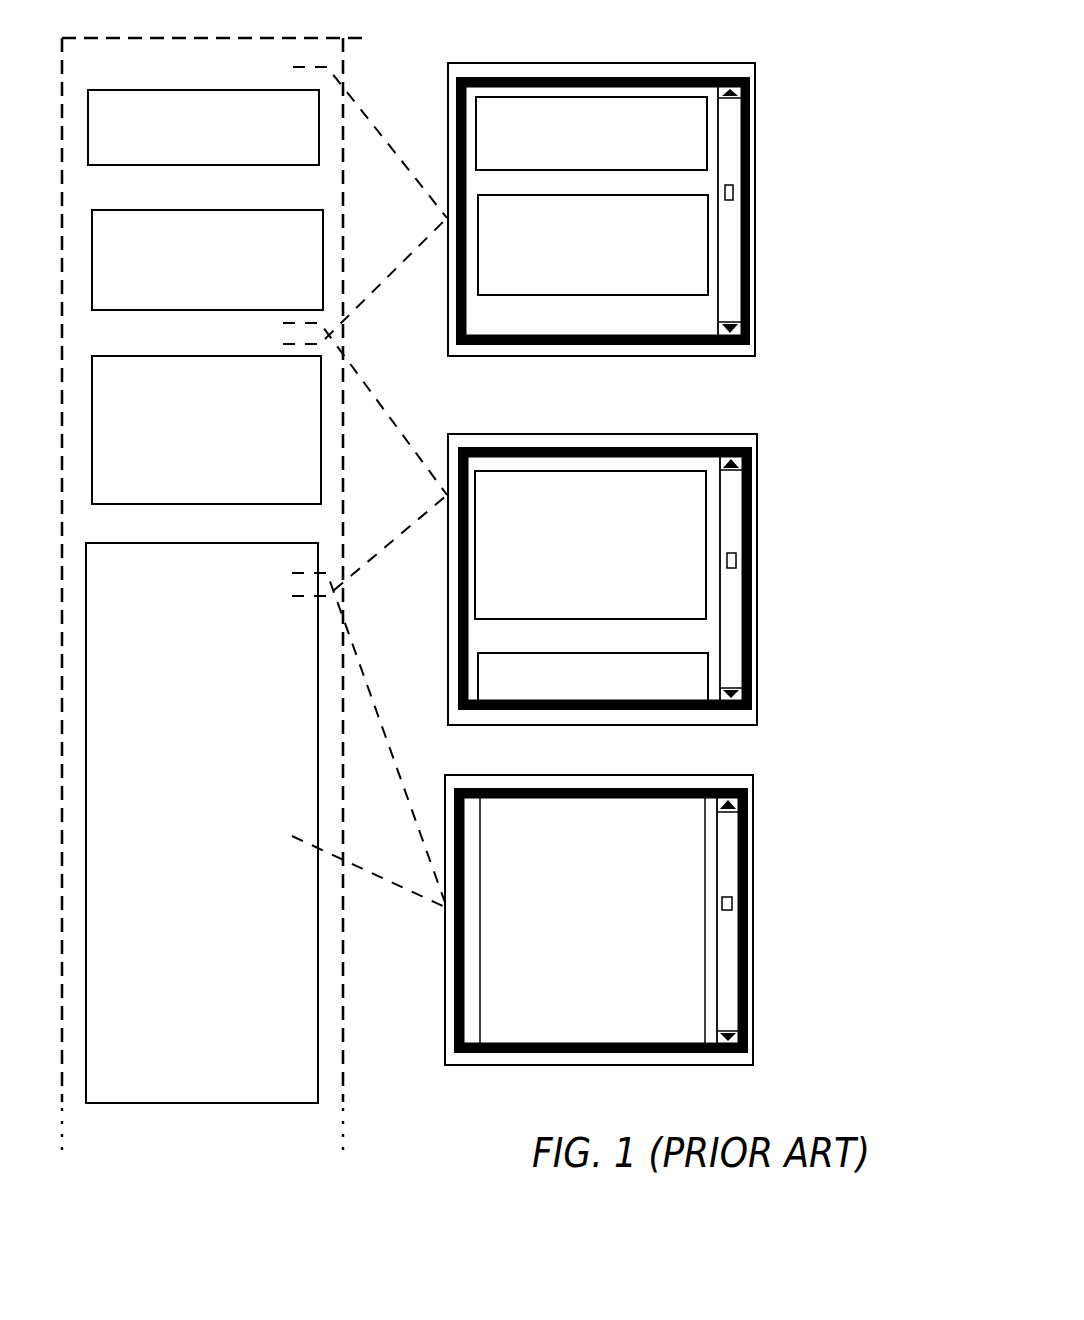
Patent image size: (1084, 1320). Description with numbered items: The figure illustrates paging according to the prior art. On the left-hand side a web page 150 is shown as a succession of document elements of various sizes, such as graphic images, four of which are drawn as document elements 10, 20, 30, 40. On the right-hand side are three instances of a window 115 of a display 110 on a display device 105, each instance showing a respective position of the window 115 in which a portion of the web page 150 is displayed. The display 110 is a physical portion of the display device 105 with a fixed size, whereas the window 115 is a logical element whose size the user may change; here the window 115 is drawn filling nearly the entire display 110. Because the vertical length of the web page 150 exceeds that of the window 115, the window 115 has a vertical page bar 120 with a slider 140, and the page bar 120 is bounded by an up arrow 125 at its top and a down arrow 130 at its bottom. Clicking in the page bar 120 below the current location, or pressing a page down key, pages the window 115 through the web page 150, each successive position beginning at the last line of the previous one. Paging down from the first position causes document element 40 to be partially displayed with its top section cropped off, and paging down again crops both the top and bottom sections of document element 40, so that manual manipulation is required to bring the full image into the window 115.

The document element 10 is at (593, 144).
The document element 20 is at (595, 256).
The document element 30 is at (592, 555).
The document element 40 is at (594, 921).
The display device 105 is at (605, 62).
The display 110 is at (562, 73).
The window 115 is at (590, 320).
The page bar 120 is at (727, 240).
The up arrow 125 is at (740, 92).
The down arrow 130 is at (747, 313).
The slider 140 is at (733, 195).
The web page 150 is at (343, 1053).